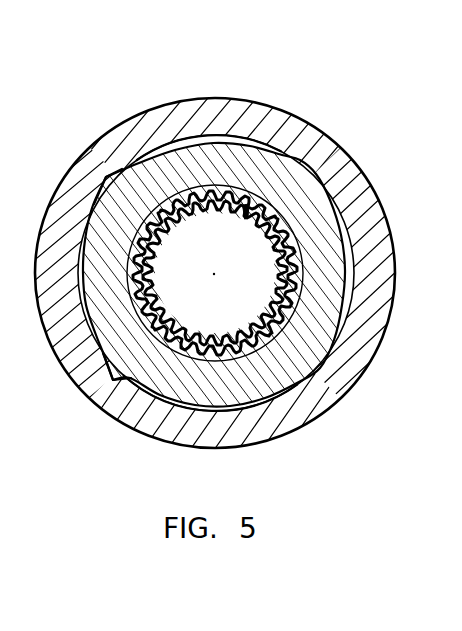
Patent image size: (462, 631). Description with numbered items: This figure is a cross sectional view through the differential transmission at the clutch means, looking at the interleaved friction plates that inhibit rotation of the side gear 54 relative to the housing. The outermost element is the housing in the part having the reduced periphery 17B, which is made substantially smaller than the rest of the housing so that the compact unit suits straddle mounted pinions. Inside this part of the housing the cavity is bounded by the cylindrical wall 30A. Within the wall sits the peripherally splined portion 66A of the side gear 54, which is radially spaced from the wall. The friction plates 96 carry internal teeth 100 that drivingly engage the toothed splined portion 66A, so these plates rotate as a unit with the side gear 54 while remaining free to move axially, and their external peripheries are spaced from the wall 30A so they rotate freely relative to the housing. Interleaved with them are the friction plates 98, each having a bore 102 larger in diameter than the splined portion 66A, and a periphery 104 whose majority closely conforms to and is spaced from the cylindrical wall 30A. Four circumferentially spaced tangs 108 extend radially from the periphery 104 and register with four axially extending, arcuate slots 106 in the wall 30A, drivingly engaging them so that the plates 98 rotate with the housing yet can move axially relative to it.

The reduced periphery 17B is at (220, 96).
The periphery 104 is at (263, 140).
The tang 108 is at (106, 177).
The friction plate 98 is at (237, 159).
The side gear 54 is at (246, 211).
The friction plate 96 is at (285, 226).
The cylindrical wall 30A is at (357, 249).
The internal teeth 100 is at (287, 262).
The bore 102 is at (268, 341).
The splined portion 66A is at (244, 360).
The slot 106 is at (113, 380).